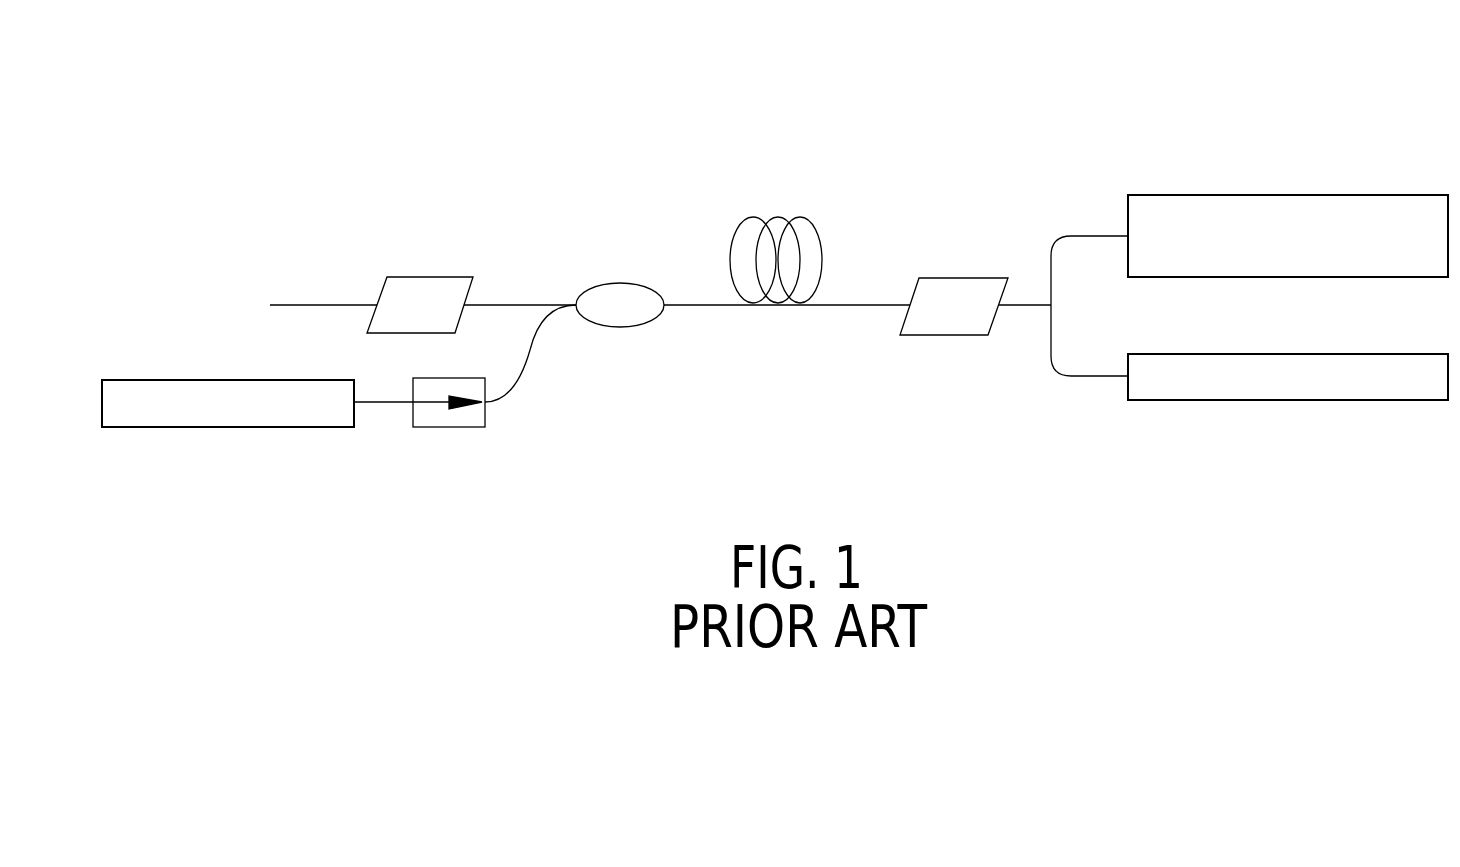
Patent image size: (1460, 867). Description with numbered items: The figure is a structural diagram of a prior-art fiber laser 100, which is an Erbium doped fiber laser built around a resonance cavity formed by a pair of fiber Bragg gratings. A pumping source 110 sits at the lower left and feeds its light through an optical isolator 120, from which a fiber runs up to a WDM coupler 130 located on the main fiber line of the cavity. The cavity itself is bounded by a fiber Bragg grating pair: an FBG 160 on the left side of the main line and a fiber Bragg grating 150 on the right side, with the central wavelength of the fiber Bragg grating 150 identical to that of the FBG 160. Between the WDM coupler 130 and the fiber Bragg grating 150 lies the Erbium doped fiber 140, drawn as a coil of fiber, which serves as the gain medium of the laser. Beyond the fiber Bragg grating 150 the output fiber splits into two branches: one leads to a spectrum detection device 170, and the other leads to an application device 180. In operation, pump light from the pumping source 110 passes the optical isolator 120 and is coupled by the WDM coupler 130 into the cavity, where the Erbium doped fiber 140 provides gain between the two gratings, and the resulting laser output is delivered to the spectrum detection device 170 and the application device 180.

The fiber laser 100 is at (376, 82).
The pumping source 110 is at (227, 427).
The optical isolator 120 is at (448, 427).
The WDM coupler 130 is at (618, 283).
The Erbium doped fiber 140 is at (777, 216).
The fiber Bragg grating 150 is at (963, 278).
The FBG 160 is at (430, 277).
The spectrum detection device 170 is at (1287, 195).
The application device 180 is at (1287, 400).